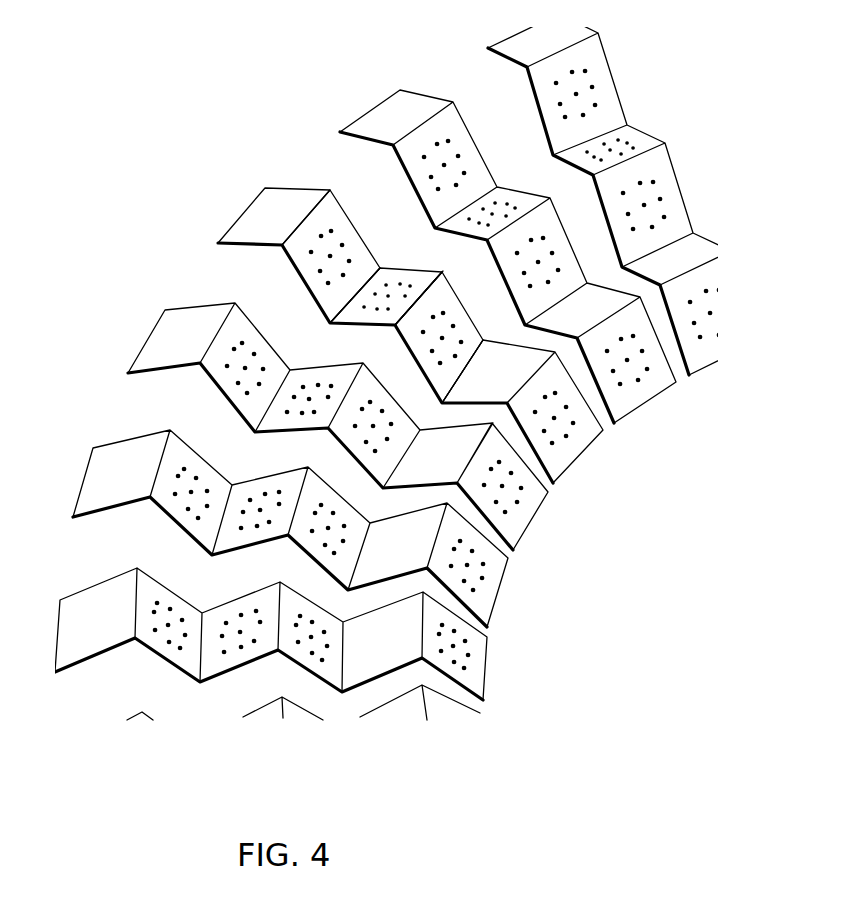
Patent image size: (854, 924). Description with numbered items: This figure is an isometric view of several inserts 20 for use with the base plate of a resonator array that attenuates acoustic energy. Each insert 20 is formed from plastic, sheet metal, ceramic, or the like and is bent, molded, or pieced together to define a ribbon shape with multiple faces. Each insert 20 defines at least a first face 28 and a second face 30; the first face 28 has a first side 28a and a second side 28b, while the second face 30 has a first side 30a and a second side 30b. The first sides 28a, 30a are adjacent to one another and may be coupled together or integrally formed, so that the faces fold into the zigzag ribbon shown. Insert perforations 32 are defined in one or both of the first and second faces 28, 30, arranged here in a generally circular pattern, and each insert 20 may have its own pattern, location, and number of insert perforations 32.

The insert 20 is at (407, 367).
The first face 28 is at (448, 302).
The first side of first face 28a is at (427, 288).
The second side of first face 28b is at (478, 365).
The second face 30 is at (390, 272).
The first side of second face 30a is at (402, 326).
The second side of second face 30b is at (333, 313).
The insert perforation 32 is at (343, 237).